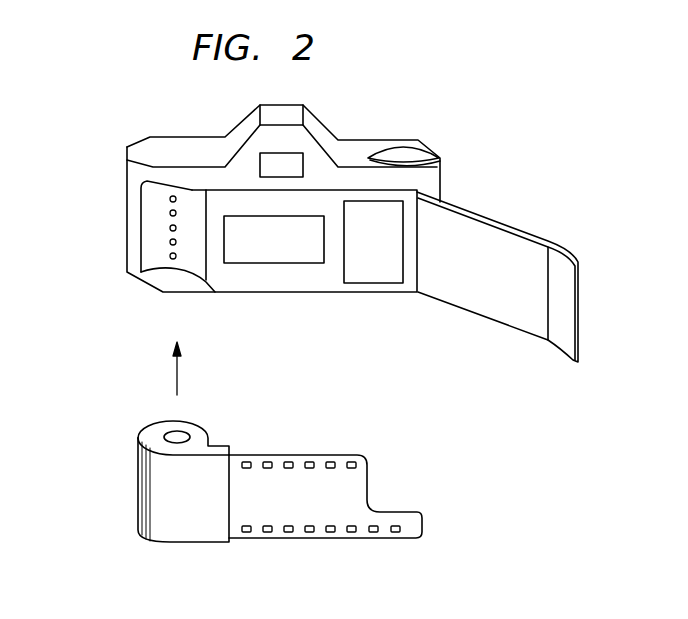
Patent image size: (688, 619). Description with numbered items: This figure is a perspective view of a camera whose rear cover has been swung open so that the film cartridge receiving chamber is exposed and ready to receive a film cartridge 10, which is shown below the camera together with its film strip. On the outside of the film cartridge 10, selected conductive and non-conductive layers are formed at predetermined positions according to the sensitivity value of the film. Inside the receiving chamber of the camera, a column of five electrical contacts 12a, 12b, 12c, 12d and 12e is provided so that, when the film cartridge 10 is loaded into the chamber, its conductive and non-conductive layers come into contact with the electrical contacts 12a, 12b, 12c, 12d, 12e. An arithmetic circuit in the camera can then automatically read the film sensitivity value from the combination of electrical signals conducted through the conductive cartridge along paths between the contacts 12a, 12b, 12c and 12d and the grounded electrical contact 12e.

The film cartridge 10 is at (148, 498).
The electrical contact 12a is at (170, 199).
The electrical contact 12b is at (170, 213).
The electrical contact 12c is at (170, 228).
The electrical contact 12d is at (170, 242).
The grounded electrical contact 12e is at (170, 257).